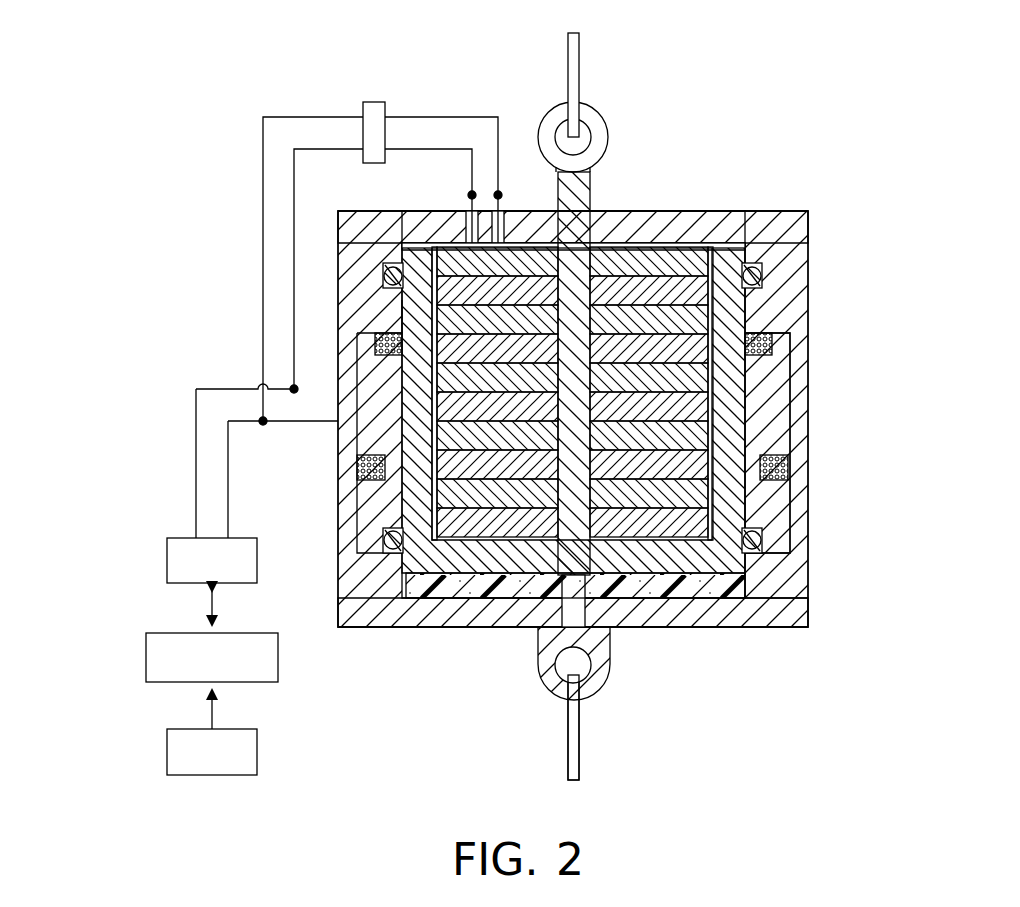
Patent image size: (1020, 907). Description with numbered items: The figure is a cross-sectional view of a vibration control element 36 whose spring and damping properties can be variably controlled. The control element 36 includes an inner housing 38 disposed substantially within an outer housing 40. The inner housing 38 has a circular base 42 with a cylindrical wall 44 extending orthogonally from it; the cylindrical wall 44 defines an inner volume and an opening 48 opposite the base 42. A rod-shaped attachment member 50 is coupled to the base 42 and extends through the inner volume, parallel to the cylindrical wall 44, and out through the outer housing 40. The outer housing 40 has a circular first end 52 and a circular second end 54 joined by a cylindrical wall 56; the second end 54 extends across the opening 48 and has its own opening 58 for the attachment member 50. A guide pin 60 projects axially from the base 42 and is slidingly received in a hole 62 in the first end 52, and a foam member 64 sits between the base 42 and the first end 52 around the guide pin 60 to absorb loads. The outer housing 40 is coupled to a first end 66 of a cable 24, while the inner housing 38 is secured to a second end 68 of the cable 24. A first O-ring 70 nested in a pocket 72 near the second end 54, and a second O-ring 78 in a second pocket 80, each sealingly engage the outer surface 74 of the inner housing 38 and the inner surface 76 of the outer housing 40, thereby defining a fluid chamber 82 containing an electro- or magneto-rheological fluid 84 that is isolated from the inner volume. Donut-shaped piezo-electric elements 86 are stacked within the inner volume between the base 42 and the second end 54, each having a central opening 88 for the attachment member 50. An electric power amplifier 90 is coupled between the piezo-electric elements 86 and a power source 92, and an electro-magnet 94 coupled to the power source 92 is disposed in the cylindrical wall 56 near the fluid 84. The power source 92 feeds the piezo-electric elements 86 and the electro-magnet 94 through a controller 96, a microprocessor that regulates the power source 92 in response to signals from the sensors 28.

The cable 24 is at (573, 57).
The sensors 28 is at (167, 737).
The vibration control element 36 is at (722, 72).
The inner housing 38 is at (749, 293).
The outer housing 40 is at (780, 312).
The circular base 42 is at (710, 598).
The cylindrical wall 44 is at (746, 350).
The opening 48 is at (697, 233).
The rod-shaped attachment member 50 is at (600, 244).
The circular first end 52 is at (776, 618).
The circular second end 54 is at (760, 222).
The cylindrical wall 56 is at (797, 262).
The opening 58 is at (583, 240).
The guide pin 60 is at (585, 612).
The hole 62 is at (603, 632).
The foam member 64 is at (715, 583).
The first end 66 is at (575, 733).
The second end 68 is at (573, 90).
The first O-ring 70 is at (370, 246).
The pocket 72 is at (383, 277).
The outer surface 74 is at (400, 292).
The inner surface 76 is at (400, 318).
The second O-ring 78 is at (390, 540).
The second pocket 80 is at (385, 553).
The fluid chamber 82 is at (402, 500).
The fluid 84 is at (362, 468).
The piezo-electric elements 86 is at (705, 490).
The central opening 88 is at (745, 531).
The electric power amplifier 90 is at (378, 108).
The power source 92 is at (167, 548).
The electro-magnet 94 is at (370, 366).
The controller 96 is at (146, 645).